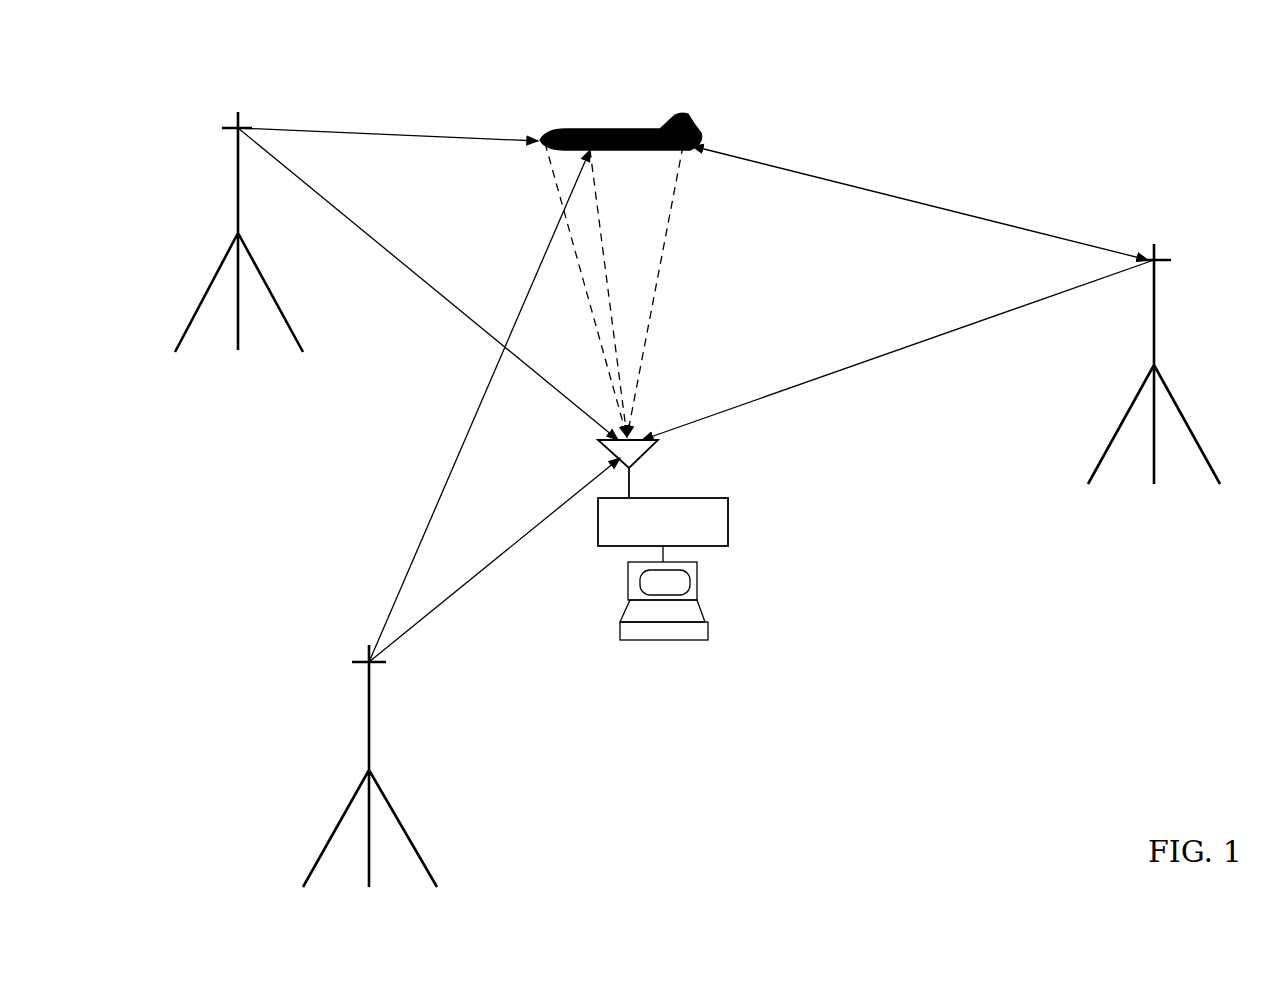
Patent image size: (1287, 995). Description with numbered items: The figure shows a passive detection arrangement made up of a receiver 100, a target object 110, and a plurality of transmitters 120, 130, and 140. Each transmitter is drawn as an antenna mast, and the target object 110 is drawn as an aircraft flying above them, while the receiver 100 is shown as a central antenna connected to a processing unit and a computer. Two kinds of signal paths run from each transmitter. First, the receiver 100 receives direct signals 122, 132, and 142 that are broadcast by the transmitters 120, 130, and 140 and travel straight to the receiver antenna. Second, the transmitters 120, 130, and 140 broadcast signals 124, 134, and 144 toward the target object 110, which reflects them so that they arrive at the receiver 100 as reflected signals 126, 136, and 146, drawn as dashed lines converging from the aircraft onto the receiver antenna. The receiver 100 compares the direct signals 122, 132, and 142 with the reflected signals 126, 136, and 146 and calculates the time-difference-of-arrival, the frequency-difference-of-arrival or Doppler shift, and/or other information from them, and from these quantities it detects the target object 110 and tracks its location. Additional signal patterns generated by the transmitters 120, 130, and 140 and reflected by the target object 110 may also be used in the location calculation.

The receiver 100 is at (728, 508).
The target object 110 is at (697, 122).
The transmitter 120 is at (238, 207).
The direct signal 122 is at (368, 230).
The signal 124 is at (410, 135).
The reflected signal 126 is at (553, 178).
The transmitter 130 is at (369, 735).
The direct signal 132 is at (498, 558).
The signal 134 is at (457, 458).
The reflected signal 136 is at (600, 217).
The transmitter 140 is at (1154, 352).
The direct signal 142 is at (862, 366).
The signal 144 is at (832, 178).
The reflected signal 146 is at (665, 265).